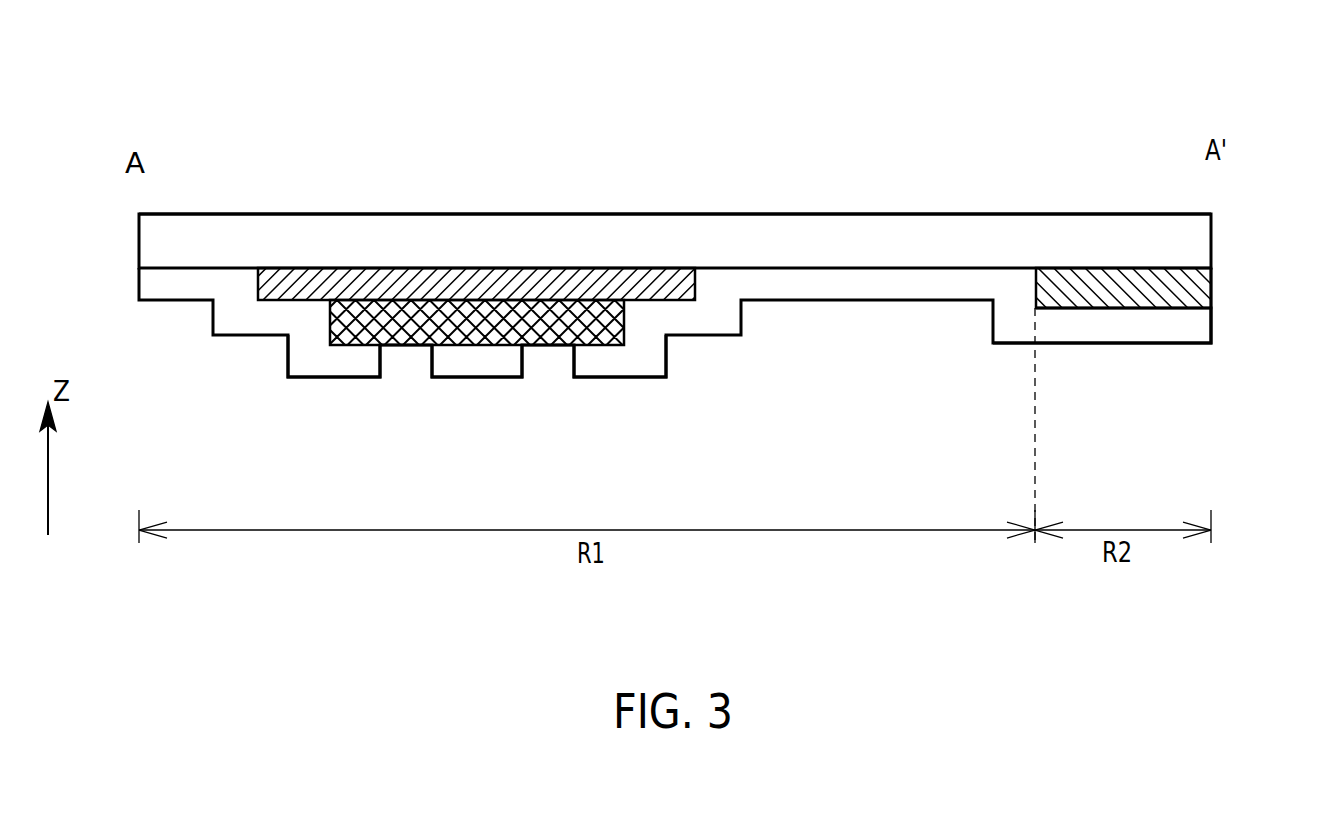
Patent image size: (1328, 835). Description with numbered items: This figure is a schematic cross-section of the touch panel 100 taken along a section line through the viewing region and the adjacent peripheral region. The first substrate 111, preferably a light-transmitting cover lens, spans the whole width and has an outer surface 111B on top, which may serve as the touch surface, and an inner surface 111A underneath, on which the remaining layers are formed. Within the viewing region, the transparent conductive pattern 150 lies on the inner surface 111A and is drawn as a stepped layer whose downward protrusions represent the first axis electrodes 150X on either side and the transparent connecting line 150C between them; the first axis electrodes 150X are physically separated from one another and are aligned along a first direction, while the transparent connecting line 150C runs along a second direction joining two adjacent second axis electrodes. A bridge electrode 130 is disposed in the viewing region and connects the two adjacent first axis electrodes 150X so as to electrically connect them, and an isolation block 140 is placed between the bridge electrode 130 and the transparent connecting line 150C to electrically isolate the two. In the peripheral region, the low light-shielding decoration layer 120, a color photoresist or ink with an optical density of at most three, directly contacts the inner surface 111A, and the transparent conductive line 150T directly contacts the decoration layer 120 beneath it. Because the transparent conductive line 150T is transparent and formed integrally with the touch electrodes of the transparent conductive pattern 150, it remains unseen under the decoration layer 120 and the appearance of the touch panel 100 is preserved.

The touch panel 100 is at (1060, 70).
The first substrate 111 is at (1202, 237).
The inner surface 111A is at (1210, 276).
The outer surface 111B is at (1185, 214).
The low light-shielding decoration layer 120 is at (1197, 290).
The bridge electrode 130 is at (415, 283).
The isolation block 140 is at (520, 315).
The transparent conductive pattern 150 is at (675, 322).
The first axis electrode 150X is at (330, 378).
The transparent connecting line 150C is at (480, 378).
The transparent conductive line 150T is at (1097, 325).